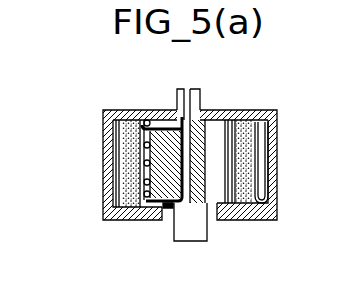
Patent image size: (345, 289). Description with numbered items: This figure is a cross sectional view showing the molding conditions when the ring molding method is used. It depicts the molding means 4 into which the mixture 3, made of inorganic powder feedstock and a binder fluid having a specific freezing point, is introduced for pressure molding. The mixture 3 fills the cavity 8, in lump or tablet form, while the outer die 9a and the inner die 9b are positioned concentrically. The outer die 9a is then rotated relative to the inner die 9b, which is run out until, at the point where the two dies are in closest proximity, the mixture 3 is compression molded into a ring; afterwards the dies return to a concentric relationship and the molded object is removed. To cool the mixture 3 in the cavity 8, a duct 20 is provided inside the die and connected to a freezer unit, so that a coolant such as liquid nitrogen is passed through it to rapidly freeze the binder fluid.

The molding means 4 is at (91, 140).
The mixture 3 is at (277, 141).
The cavity 8 is at (132, 116).
The outer die 9a is at (119, 221).
The inner die 9b is at (265, 113).
The duct 20 is at (208, 132).